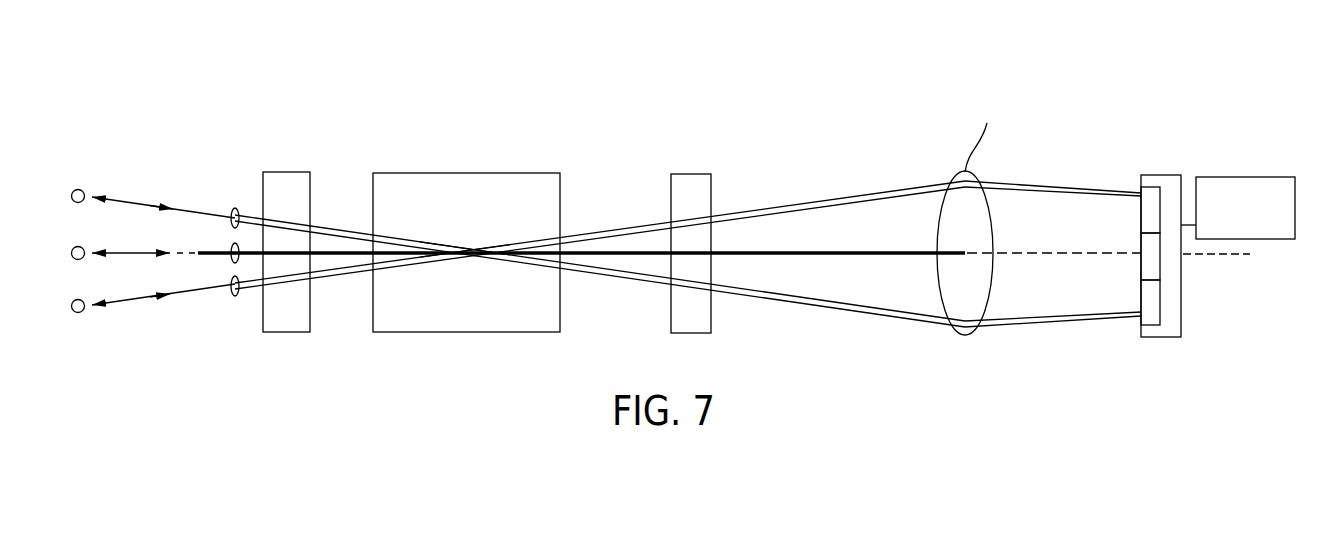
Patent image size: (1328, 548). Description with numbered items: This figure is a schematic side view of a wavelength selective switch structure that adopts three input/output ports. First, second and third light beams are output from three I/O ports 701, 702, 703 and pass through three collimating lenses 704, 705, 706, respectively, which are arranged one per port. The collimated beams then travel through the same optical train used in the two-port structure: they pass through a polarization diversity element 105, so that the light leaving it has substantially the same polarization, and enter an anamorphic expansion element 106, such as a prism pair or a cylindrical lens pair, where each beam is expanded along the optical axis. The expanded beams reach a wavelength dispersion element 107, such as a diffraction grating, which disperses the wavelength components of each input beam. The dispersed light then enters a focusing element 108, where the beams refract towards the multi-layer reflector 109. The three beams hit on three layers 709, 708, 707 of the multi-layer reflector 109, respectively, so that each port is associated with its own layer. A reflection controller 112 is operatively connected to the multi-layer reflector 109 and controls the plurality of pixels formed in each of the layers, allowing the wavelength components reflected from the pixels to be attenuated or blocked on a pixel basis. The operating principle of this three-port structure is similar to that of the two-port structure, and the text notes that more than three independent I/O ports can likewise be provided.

The I/O port 701 is at (84, 190).
The I/O port 702 is at (72, 248).
The I/O port 703 is at (84, 312).
The collimating lens 704 is at (238, 209).
The collimating lens 705 is at (232, 245).
The collimating lens 706 is at (238, 296).
The polarization diversity element 105 is at (295, 170).
The anamorphic expansion element 106 is at (510, 172).
The focusing element 108 is at (487, 191).
The wavelength dispersion element 107 is at (697, 173).
The layer 707 is at (1150, 193).
The layer 708 is at (1147, 245).
The layer 709 is at (1147, 307).
The multi-layer reflector 109 is at (1167, 183).
The reflection controller 112 is at (1238, 177).